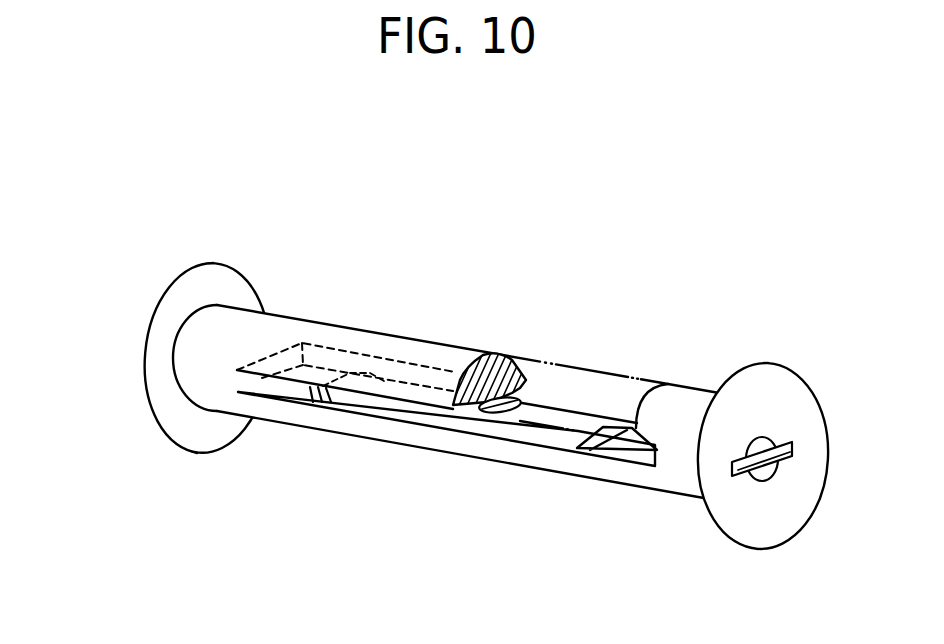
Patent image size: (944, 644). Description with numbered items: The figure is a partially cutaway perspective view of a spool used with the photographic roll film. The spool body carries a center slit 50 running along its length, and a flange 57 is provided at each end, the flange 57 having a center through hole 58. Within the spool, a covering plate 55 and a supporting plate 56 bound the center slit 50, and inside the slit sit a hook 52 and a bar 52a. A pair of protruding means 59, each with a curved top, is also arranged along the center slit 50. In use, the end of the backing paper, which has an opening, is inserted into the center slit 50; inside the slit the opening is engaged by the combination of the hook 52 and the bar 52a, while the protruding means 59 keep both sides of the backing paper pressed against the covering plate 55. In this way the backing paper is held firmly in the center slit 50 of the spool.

The center slit 50 is at (297, 390).
The hook 52 is at (455, 410).
The bar 52a is at (512, 413).
The covering plate 55 is at (287, 312).
The supporting plate 56 is at (619, 473).
The flange 57 is at (145, 328).
The center through hole 58 is at (762, 472).
The protruding means 59 is at (325, 398).